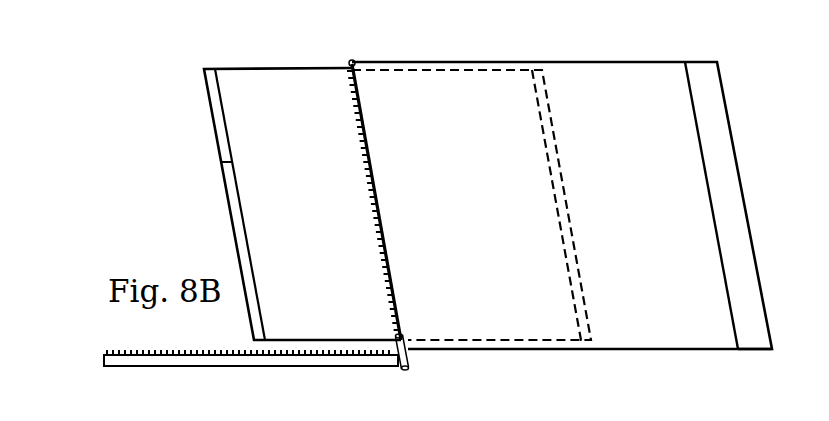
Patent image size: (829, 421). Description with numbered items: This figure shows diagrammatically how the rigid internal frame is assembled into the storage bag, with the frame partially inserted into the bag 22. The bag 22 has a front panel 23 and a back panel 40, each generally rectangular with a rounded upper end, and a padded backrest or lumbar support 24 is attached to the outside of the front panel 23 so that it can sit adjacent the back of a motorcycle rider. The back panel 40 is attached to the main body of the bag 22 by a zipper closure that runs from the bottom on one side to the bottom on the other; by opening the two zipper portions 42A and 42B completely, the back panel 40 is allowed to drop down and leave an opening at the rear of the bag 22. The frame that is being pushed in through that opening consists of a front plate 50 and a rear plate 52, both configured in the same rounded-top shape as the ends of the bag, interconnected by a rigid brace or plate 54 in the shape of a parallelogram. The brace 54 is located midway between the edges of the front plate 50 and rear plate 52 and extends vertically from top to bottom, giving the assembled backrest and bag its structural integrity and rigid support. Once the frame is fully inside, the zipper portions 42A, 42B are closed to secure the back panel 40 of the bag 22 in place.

The bag 22 is at (618, 71).
The front panel 23 is at (731, 337).
The padded backrest or lumbar support 24 is at (728, 102).
The back panel 40 is at (152, 367).
The zipper portion 42A is at (351, 64).
The zipper portion 42B is at (120, 352).
The front plate 50 is at (556, 150).
The rear plate 52 is at (218, 122).
The rigid brace or plate 54 is at (243, 68).